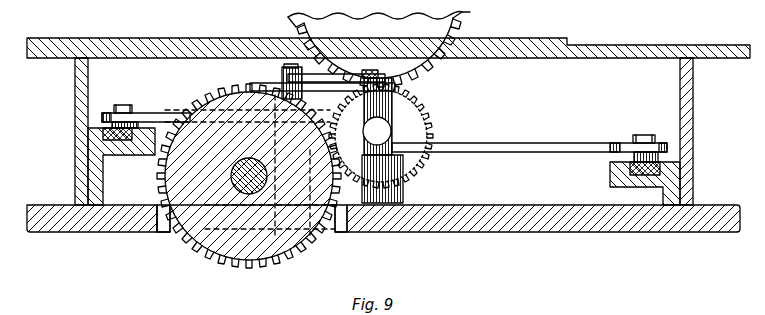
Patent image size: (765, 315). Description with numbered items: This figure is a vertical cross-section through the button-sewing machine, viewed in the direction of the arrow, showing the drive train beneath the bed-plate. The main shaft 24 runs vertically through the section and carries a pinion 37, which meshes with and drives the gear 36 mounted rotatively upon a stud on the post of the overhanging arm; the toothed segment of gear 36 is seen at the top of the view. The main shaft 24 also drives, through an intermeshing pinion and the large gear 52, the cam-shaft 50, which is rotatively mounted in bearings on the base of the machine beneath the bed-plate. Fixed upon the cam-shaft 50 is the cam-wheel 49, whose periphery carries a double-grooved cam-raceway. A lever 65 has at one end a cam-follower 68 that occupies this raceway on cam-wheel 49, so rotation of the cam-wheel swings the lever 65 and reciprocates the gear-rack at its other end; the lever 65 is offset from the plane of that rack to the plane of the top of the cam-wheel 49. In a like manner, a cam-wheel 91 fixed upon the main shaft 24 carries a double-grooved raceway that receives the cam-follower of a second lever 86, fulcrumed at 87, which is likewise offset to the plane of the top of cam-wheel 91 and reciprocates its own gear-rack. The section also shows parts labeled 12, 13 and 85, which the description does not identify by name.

The top plate 12 is at (550, 38).
The frame walls and base 13 is at (75, 176).
The main shaft 24 is at (395, 134).
The gear 36 is at (433, 32).
The pinion 37 is at (418, 112).
The cam-wheel 49 is at (322, 228).
The cam-shaft 50 is at (185, 237).
The gear 52 is at (197, 100).
The lever 65 is at (372, 100).
The cam-follower 68 is at (228, 88).
The bearing bracket 85 is at (107, 142).
The lever 86 is at (150, 117).
The fulcrum 87 is at (290, 74).
The cam-wheel 91 is at (403, 121).